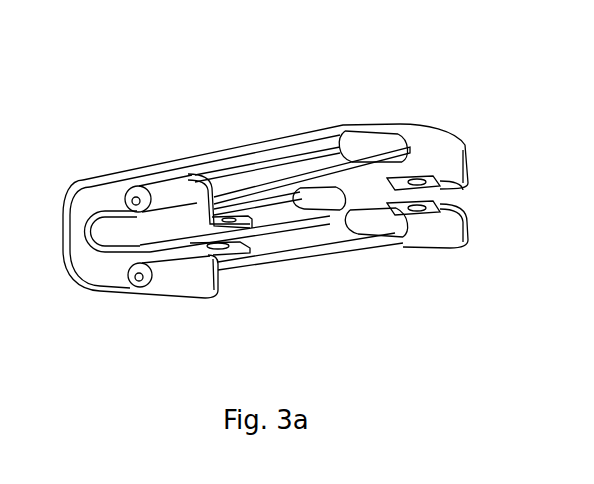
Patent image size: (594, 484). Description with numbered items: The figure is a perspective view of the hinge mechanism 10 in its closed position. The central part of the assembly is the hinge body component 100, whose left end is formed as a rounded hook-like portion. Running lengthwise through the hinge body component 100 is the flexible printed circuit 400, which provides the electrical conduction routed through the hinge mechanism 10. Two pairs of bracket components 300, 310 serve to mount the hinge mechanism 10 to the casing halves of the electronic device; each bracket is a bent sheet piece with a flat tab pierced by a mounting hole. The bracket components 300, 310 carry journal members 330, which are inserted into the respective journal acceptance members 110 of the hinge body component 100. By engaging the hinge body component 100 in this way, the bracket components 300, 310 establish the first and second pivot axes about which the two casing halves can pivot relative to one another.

The hinge mechanism 10 is at (97, 335).
The hinge body component 100 is at (87, 200).
The journal acceptance member 110 is at (173, 177).
The bracket component 300 is at (467, 138).
The bracket component 310 is at (210, 302).
The journal member 330 is at (135, 196).
The flexible printed circuit 400 is at (300, 180).